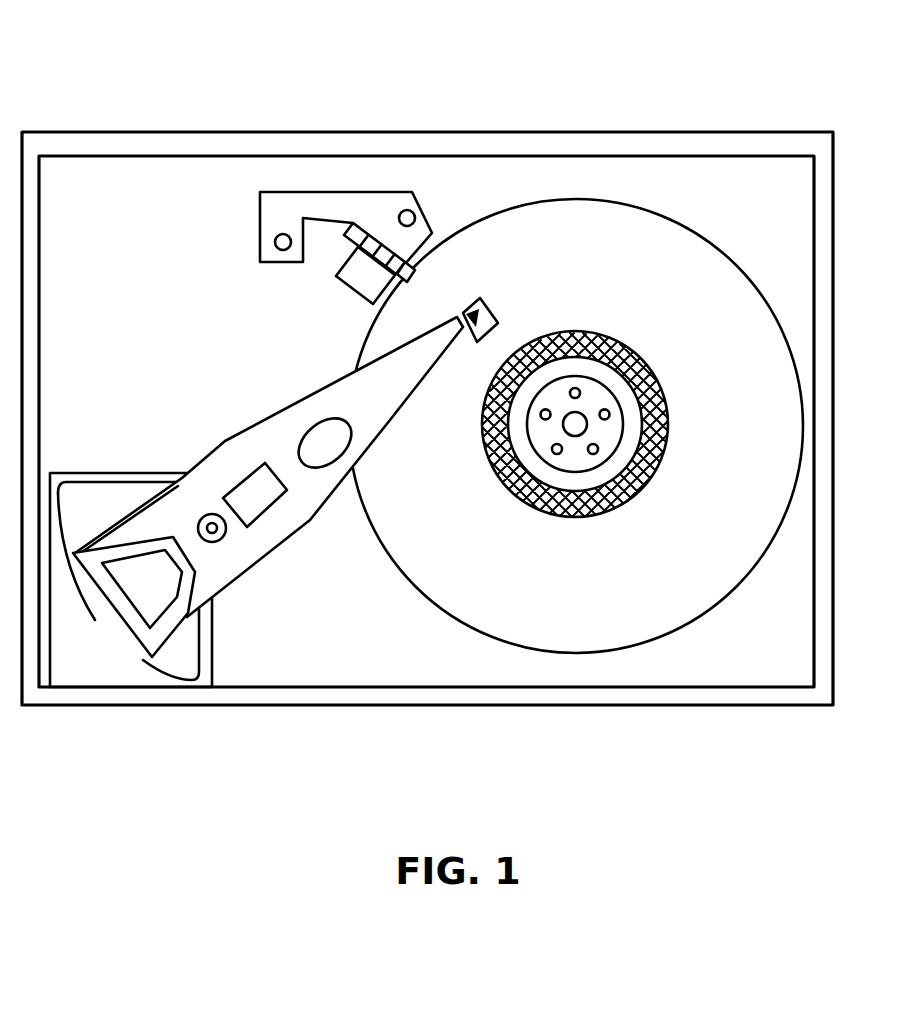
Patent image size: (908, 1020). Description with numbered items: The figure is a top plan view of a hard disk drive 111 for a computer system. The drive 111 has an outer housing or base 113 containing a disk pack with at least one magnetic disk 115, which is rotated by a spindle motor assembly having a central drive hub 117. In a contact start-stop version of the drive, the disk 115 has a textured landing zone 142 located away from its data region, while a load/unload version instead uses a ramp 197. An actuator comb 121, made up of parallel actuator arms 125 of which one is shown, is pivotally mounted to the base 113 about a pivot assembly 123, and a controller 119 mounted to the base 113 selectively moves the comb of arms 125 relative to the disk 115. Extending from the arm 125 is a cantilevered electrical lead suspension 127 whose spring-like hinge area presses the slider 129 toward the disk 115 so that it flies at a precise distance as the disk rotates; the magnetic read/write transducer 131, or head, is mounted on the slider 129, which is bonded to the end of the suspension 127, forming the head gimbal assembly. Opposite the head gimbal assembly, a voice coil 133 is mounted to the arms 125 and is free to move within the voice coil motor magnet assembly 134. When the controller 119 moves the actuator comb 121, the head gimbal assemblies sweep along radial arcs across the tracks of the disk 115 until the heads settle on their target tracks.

The hard disk drive 111 is at (404, 75).
The base 113 is at (823, 188).
The magnetic disk 115 is at (690, 230).
The central drive hub 117 is at (605, 432).
The controller 119 is at (131, 617).
The actuator comb 121 is at (317, 452).
The pivot assembly 123 is at (218, 541).
The actuator arm 125 is at (313, 522).
The electrical lead suspension 127 is at (388, 383).
The slider 129 is at (515, 294).
The magnetic read/write transducer 131 is at (495, 315).
The voice coil 133 is at (104, 548).
The voice coil motor magnet assembly 134 is at (128, 651).
The textured landing zone 142 is at (587, 333).
The ramp 197 is at (365, 297).